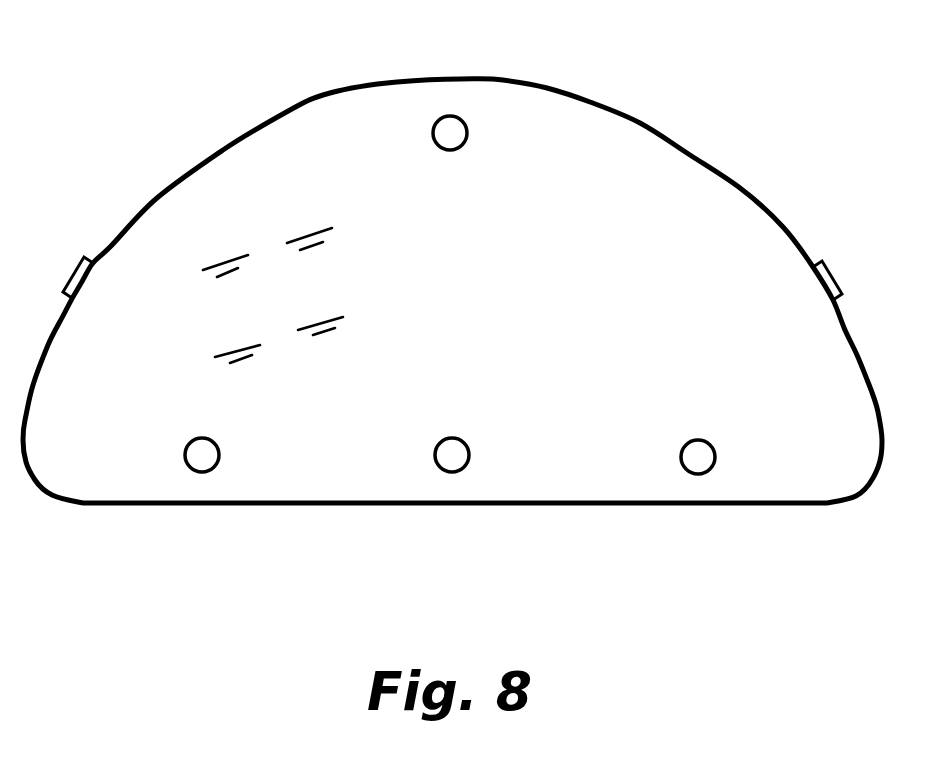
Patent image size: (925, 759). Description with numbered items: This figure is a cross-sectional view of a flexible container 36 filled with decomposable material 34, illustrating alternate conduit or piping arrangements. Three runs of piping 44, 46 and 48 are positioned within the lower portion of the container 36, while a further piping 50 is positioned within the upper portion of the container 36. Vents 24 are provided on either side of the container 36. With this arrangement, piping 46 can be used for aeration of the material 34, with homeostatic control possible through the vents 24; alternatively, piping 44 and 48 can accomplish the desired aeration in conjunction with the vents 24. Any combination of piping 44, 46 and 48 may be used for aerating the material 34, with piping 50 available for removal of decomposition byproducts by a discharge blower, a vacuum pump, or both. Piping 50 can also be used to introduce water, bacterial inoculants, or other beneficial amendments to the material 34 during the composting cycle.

The vent 24 is at (78, 268).
The decomposable material 34 is at (278, 302).
The container 36 is at (740, 187).
The piping 44 is at (200, 460).
The piping 46 is at (448, 465).
The piping 48 is at (703, 463).
The piping 50 is at (445, 127).